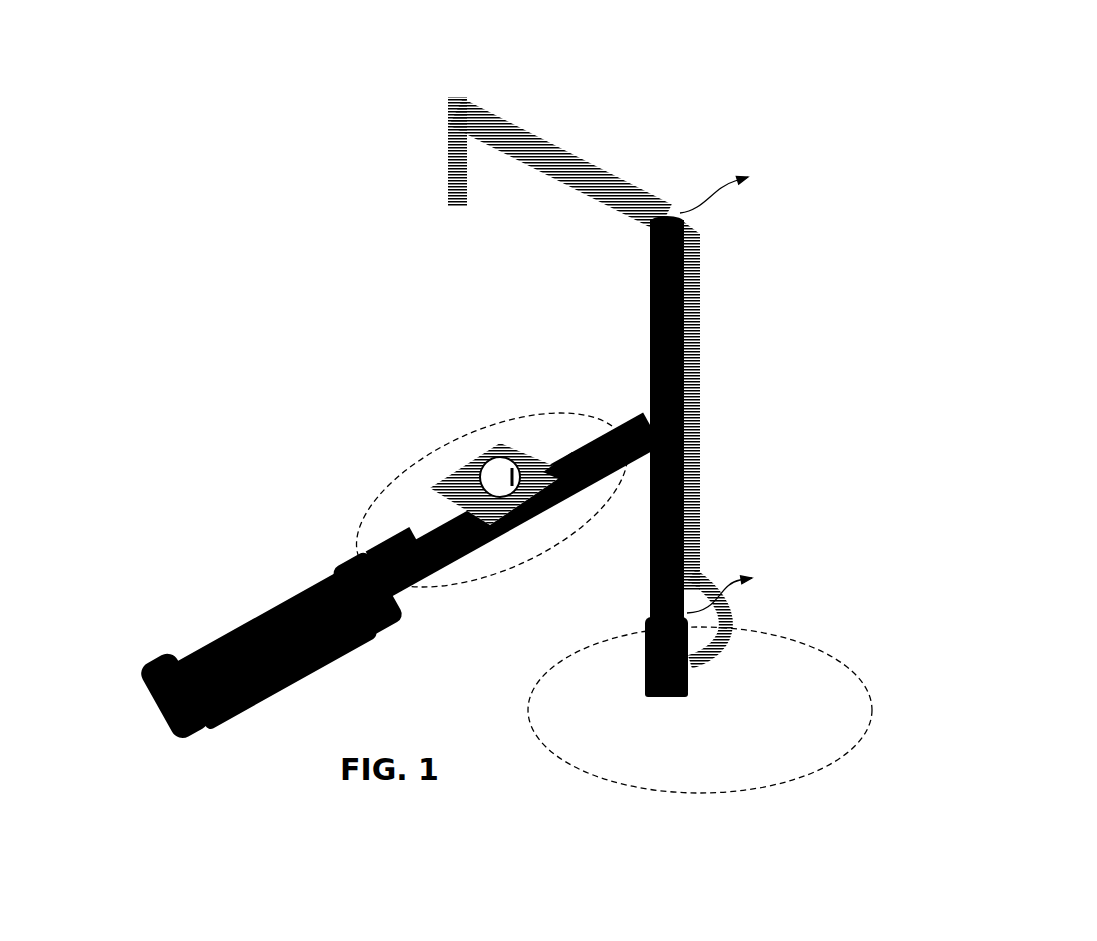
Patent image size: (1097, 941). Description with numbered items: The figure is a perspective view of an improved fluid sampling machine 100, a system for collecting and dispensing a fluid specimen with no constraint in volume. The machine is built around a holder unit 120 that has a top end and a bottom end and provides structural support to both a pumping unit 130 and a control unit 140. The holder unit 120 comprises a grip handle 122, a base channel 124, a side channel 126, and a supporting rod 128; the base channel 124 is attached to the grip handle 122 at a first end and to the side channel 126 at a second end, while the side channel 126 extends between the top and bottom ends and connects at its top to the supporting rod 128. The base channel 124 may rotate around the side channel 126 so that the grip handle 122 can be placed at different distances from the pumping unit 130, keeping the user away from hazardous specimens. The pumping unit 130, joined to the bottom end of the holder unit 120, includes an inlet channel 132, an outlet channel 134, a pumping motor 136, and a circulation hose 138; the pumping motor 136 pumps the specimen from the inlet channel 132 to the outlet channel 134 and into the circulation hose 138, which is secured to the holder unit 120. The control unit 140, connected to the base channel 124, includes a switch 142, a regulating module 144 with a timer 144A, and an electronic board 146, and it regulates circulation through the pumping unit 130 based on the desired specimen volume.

The fluid sampling machine 100 is at (838, 85).
The holder unit 120 is at (648, 338).
The grip handle 122 is at (237, 630).
The base channel 124 is at (455, 548).
The side channel 126 is at (648, 290).
The supporting rod 128 is at (450, 127).
The pumping unit 130 is at (833, 770).
The inlet channel 132 is at (688, 693).
The outlet channel 134 is at (690, 668).
The pumping motor 136 is at (650, 690).
The circulation hose 138 is at (690, 438).
The control unit 140 is at (507, 557).
The switch 142 is at (397, 545).
The regulating module 144 is at (460, 482).
The timer 144A is at (488, 458).
The electronic board 146 is at (567, 453).